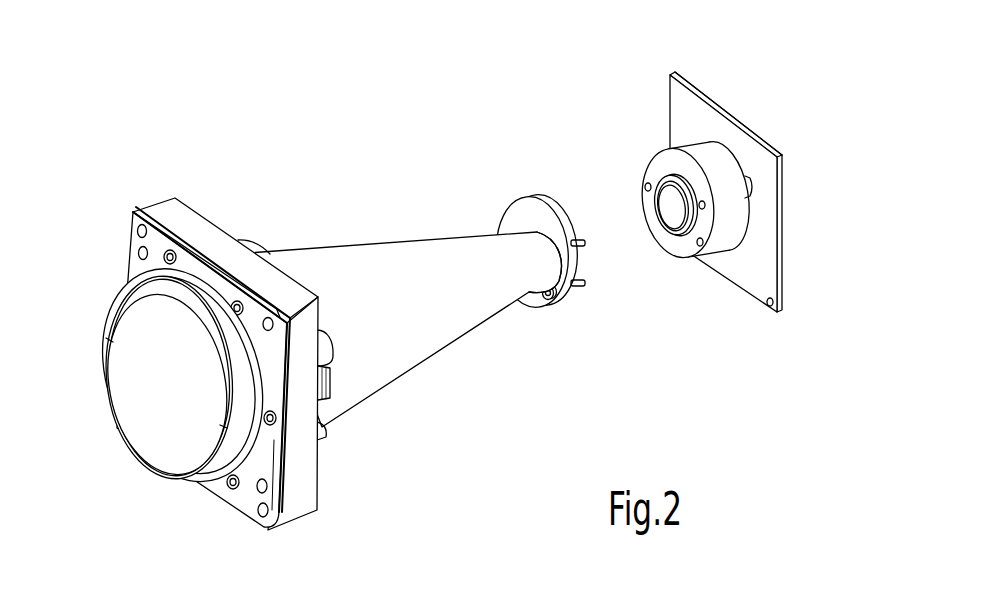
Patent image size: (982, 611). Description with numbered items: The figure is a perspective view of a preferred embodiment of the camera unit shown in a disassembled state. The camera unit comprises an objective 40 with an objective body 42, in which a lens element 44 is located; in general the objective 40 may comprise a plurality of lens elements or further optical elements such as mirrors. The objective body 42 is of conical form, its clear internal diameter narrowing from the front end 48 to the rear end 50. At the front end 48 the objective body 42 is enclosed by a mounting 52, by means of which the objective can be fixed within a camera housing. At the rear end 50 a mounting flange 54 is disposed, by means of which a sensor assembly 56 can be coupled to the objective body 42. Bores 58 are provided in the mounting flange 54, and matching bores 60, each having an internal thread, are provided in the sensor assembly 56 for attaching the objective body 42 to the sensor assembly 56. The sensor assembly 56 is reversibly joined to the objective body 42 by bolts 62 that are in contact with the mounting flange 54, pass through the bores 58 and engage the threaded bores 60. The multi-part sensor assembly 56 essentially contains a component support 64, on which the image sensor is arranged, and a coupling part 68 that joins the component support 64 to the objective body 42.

The objective 40 is at (341, 301).
The objective body 42 is at (399, 371).
The lens element 44 is at (165, 388).
The front end 48 is at (181, 349).
The rear end 50 is at (550, 220).
The mounting 52 is at (188, 216).
The mounting flange 54 is at (529, 297).
The sensor assembly 56 is at (741, 203).
The bores 58 is at (563, 299).
The bores 60 is at (696, 246).
The bolts 62 is at (567, 238).
The component support 64 is at (748, 262).
The coupling part 68 is at (695, 140).